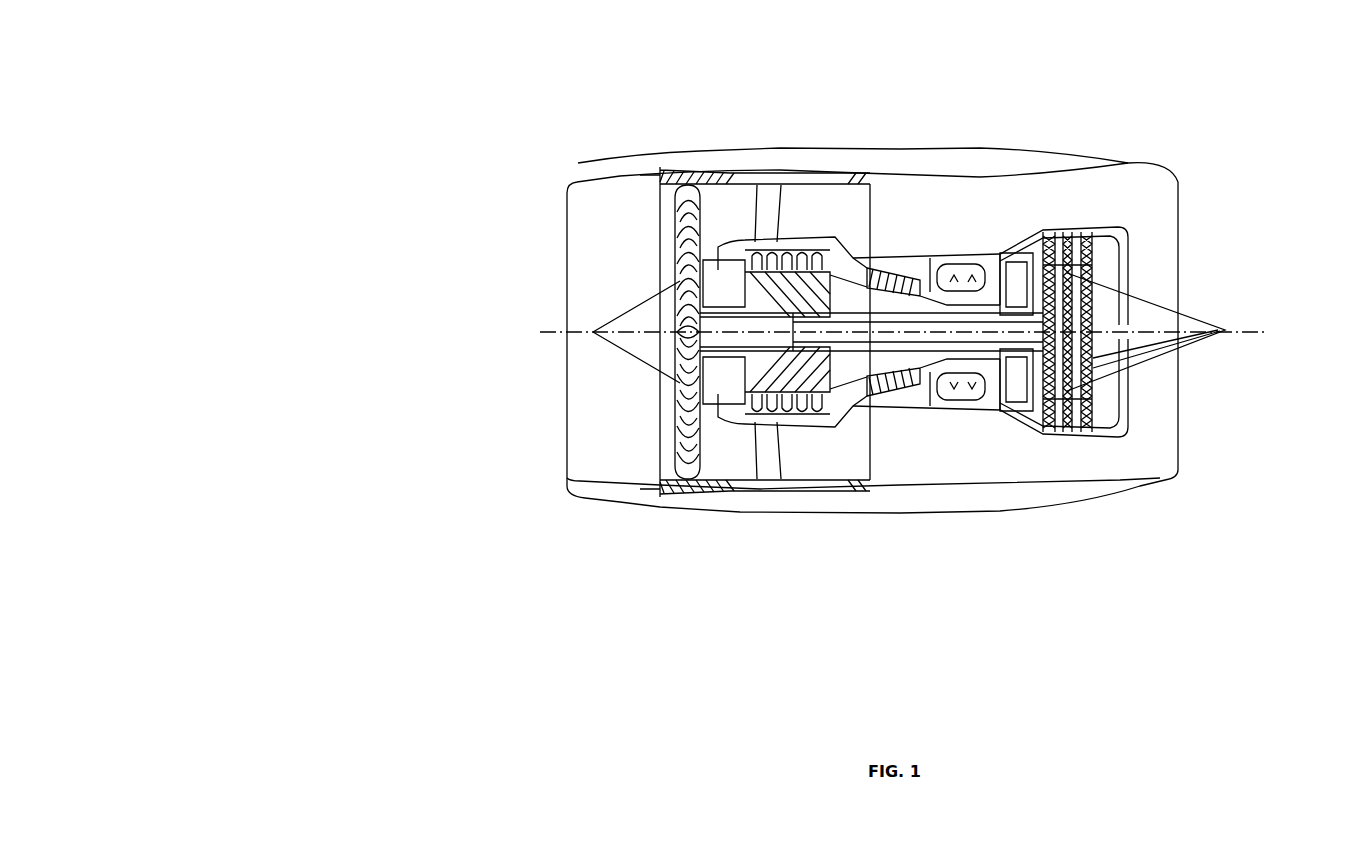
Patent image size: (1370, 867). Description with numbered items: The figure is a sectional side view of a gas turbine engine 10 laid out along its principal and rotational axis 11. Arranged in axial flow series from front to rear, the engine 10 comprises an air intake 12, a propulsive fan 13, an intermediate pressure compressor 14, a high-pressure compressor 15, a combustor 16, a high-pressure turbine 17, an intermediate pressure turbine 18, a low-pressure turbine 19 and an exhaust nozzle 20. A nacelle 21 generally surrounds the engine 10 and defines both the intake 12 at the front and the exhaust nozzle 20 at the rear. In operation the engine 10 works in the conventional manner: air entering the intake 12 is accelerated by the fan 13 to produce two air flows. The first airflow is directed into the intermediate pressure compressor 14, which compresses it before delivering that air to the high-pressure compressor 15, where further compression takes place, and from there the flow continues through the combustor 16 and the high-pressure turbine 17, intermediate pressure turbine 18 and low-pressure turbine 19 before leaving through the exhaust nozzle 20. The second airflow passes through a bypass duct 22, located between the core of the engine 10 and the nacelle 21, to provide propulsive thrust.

The gas turbine engine 10 is at (342, 155).
The principal and rotational axis 11 is at (545, 332).
The air intake 12 is at (606, 180).
The propulsive fan 13 is at (687, 467).
The intermediate pressure compressor 14 is at (800, 410).
The high-pressure compressor 15 is at (907, 270).
The combustor 16 is at (962, 390).
The high-pressure turbine 17 is at (997, 387).
The intermediate pressure turbine 18 is at (1043, 260).
The low-pressure turbine 19 is at (1053, 410).
The exhaust nozzle 20 is at (1180, 407).
The nacelle 21 is at (963, 148).
The bypass duct 22 is at (839, 224).